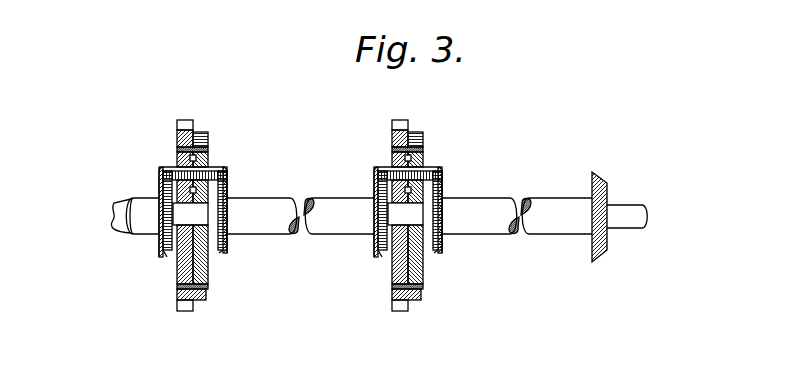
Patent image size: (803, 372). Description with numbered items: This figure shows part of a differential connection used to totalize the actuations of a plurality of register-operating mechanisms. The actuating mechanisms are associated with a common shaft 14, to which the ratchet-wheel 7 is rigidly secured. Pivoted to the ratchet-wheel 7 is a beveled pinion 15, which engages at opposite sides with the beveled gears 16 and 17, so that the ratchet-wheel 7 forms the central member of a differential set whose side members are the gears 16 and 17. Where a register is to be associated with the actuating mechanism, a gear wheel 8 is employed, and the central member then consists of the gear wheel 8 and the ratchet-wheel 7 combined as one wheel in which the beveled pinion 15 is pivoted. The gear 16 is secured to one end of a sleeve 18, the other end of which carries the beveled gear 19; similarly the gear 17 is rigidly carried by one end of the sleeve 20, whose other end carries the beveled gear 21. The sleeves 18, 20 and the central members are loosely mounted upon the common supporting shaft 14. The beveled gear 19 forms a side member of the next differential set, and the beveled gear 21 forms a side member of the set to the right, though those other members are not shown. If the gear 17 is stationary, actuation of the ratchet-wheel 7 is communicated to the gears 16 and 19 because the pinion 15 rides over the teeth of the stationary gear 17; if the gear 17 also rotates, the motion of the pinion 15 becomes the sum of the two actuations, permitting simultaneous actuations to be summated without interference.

The ratchet-wheel 7 is at (438, 146).
The gear wheel 8 is at (383, 133).
The common shaft 14 is at (635, 217).
The beveled pinion 15 is at (411, 229).
The beveled gear 16 is at (360, 229).
The beveled gear 17 is at (455, 229).
The sleeve 18 is at (263, 234).
The beveled gear 19 is at (215, 255).
The sleeve 20 is at (491, 235).
The beveled gear 21 is at (593, 262).